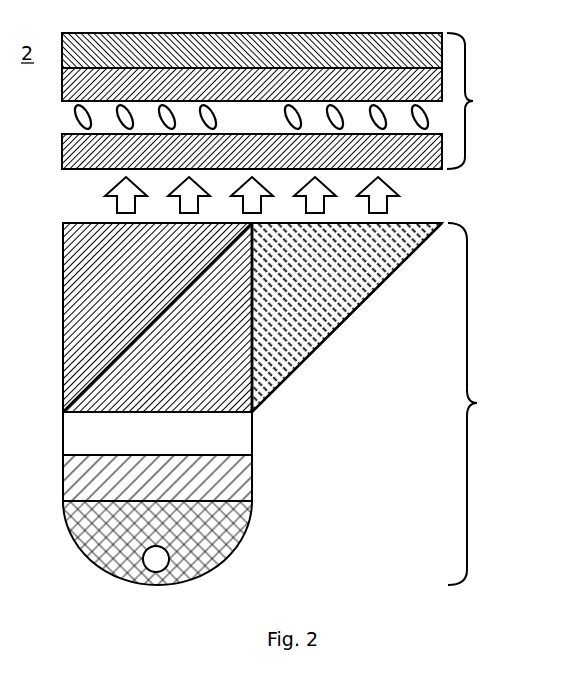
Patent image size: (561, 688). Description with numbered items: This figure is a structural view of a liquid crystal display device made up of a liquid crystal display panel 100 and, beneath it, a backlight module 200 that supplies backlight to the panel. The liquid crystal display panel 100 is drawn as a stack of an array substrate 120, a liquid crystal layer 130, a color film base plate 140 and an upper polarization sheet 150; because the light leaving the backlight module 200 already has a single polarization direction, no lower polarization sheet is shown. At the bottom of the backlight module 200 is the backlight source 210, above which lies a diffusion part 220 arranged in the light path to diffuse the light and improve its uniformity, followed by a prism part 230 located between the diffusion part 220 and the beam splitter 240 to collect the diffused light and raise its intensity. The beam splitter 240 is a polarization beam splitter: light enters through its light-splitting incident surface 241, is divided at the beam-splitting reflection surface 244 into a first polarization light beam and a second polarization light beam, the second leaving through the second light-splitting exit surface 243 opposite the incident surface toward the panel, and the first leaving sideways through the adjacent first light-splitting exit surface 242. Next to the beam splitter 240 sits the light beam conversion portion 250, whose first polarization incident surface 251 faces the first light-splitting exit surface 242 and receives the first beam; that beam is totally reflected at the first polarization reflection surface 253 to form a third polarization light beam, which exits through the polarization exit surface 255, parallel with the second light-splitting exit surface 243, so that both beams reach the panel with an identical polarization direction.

The liquid crystal display panel 100 is at (290, 101).
The upper polarization sheet 150 is at (252, 50).
The color film base plate 140 is at (252, 84).
The liquid crystal layer 130 is at (252, 117).
The array substrate 120 is at (252, 151).
The backlight module 200 is at (289, 404).
The beam splitter 240 is at (157, 317).
The light-splitting incident surface 241 is at (157, 399).
The first light-splitting exit surface 242 is at (230, 317).
The second light-splitting exit surface 243 is at (157, 236).
The beam-splitting reflection surface 244 is at (157, 317).
The light beam conversion portion 250 is at (347, 317).
The first polarization incident surface 251 is at (267, 317).
The first polarization reflection surface 253 is at (347, 317).
The polarization exit surface 255 is at (347, 236).
The prism part 230 is at (157, 433).
The diffusion part 220 is at (157, 478).
The backlight source 210 is at (157, 543).